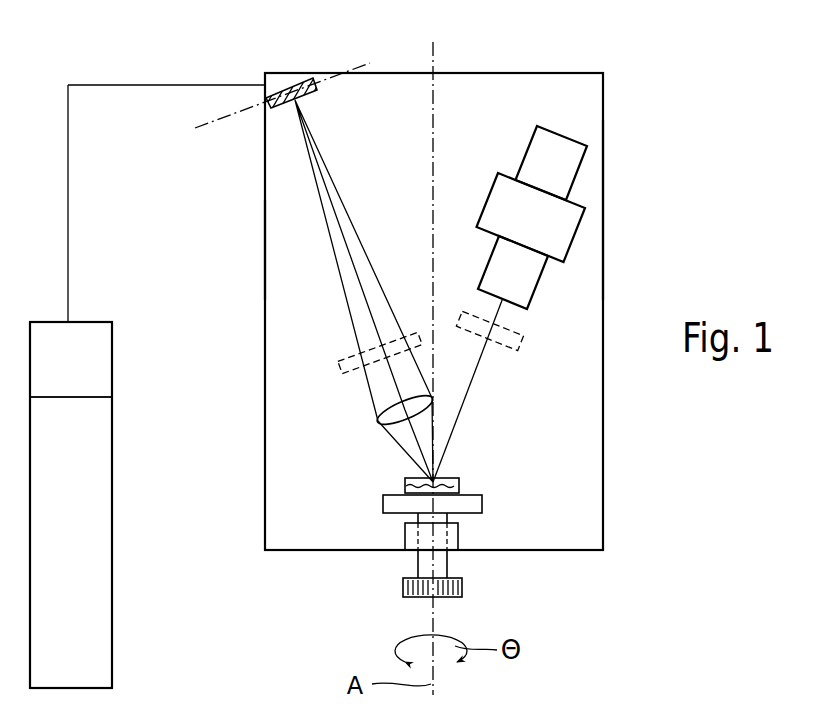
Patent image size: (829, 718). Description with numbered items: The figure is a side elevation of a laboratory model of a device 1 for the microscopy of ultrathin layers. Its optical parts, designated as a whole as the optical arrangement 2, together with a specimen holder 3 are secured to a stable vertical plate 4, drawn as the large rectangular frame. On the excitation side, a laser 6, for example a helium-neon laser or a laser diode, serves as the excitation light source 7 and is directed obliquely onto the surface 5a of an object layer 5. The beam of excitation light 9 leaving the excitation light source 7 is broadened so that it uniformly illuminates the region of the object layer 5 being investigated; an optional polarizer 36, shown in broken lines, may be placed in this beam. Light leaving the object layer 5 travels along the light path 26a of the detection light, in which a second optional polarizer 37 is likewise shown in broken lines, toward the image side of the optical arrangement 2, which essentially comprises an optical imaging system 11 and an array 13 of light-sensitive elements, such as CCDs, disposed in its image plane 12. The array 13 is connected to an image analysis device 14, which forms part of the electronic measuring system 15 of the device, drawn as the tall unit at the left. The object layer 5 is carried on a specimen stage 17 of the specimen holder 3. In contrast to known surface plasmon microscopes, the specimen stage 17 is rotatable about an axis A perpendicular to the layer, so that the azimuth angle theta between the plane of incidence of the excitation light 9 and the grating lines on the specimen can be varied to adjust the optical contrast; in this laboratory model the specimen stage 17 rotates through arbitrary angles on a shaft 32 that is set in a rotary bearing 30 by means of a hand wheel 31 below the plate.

The device 1 is at (215, 243).
The optical arrangement 2 is at (472, 113).
The specimen holder 3 is at (505, 527).
The vertical plate 4 is at (603, 238).
The object layer 5 is at (410, 478).
The surface 5a is at (455, 476).
The laser 6 is at (560, 163).
The excitation light source 7 is at (545, 270).
The excitation light 9 is at (475, 373).
The optical imaging system 11 is at (308, 378).
The image plane 12 is at (232, 113).
The array of light-sensitive elements 13 is at (314, 90).
The image analysis device 14 is at (56, 368).
The electronic measuring system 15 is at (112, 535).
The specimen stage 17 is at (472, 505).
The light path of the detection light 26a is at (347, 245).
The rotary bearing 30 is at (455, 535).
The hand wheel 31 is at (404, 590).
The shaft 32 is at (418, 563).
The polarizer 36 is at (460, 312).
The polarizer 37 is at (355, 370).